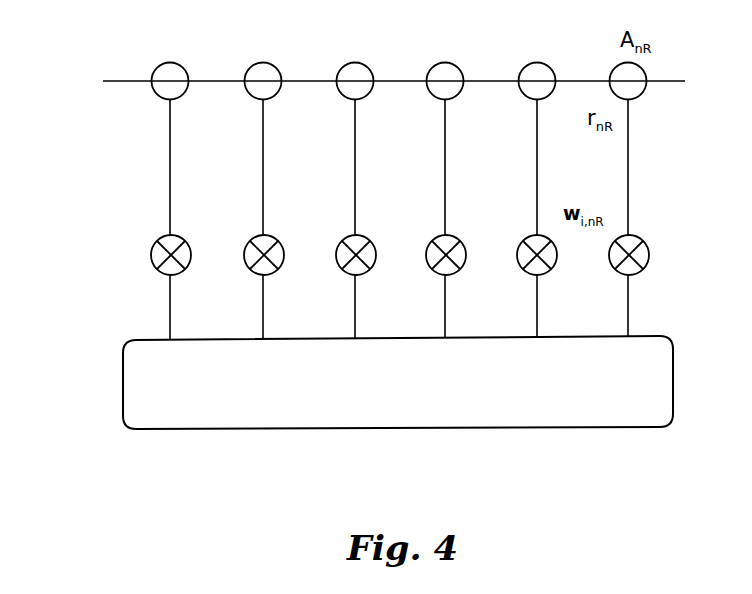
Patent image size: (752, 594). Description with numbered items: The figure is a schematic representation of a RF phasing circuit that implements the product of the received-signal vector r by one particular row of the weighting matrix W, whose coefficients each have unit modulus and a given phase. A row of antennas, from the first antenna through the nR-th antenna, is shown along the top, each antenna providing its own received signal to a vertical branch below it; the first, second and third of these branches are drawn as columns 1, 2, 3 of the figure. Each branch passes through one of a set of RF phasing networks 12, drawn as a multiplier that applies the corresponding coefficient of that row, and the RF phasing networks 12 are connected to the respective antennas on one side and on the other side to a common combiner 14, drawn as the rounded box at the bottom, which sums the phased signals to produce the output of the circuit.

The first input column (A1, r1, w_i,1) 1 is at (158, 184).
The second input column (A2, r2, w_i,2) 2 is at (251, 183).
The third input column (A3, r3, w_i,3) 3 is at (343, 183).
The RF phasing network 12 is at (151, 262).
The common combiner 14 is at (123, 393).